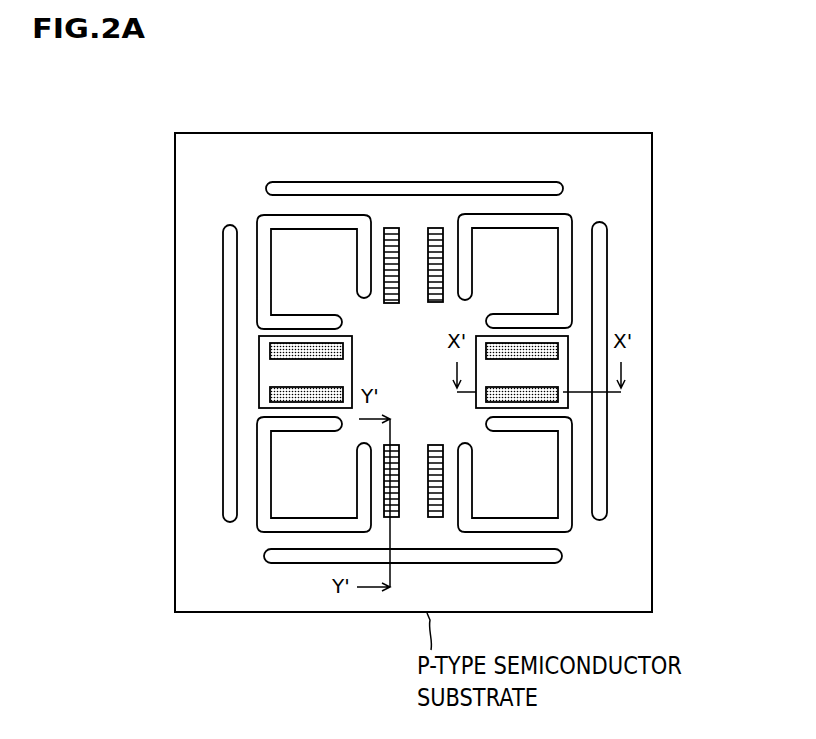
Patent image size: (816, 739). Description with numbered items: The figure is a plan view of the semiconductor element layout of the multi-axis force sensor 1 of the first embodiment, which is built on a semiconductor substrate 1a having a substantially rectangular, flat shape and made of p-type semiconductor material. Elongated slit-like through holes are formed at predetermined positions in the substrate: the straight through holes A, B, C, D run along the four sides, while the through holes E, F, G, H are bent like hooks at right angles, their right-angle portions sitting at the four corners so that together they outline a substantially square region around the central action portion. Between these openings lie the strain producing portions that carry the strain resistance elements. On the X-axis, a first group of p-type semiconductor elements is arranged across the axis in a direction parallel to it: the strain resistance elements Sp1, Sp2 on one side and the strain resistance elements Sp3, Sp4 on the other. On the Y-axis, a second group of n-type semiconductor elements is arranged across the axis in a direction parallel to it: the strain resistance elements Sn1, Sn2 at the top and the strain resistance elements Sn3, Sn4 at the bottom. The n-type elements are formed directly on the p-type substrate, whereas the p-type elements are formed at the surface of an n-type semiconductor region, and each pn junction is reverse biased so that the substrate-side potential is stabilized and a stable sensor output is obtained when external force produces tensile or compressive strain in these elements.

The multi-axis force sensor 1 is at (470, 328).
The semiconductor substrate 1a is at (633, 132).
The through hole A is at (607, 483).
The through hole B is at (518, 181).
The through hole C is at (223, 271).
The through hole D is at (312, 565).
The through hole E is at (567, 527).
The through hole F is at (570, 217).
The through hole G is at (260, 218).
The through hole H is at (259, 531).
The strain resistance element Sn1 is at (443, 265).
The strain resistance element Sn2 is at (384, 265).
The strain resistance element Sn3 is at (384, 466).
The strain resistance element Sn4 is at (443, 466).
The strain resistance element Sp1 is at (543, 400).
The strain resistance element Sp2 is at (543, 343).
The strain resistance element Sp3 is at (290, 343).
The strain resistance element Sp4 is at (290, 402).